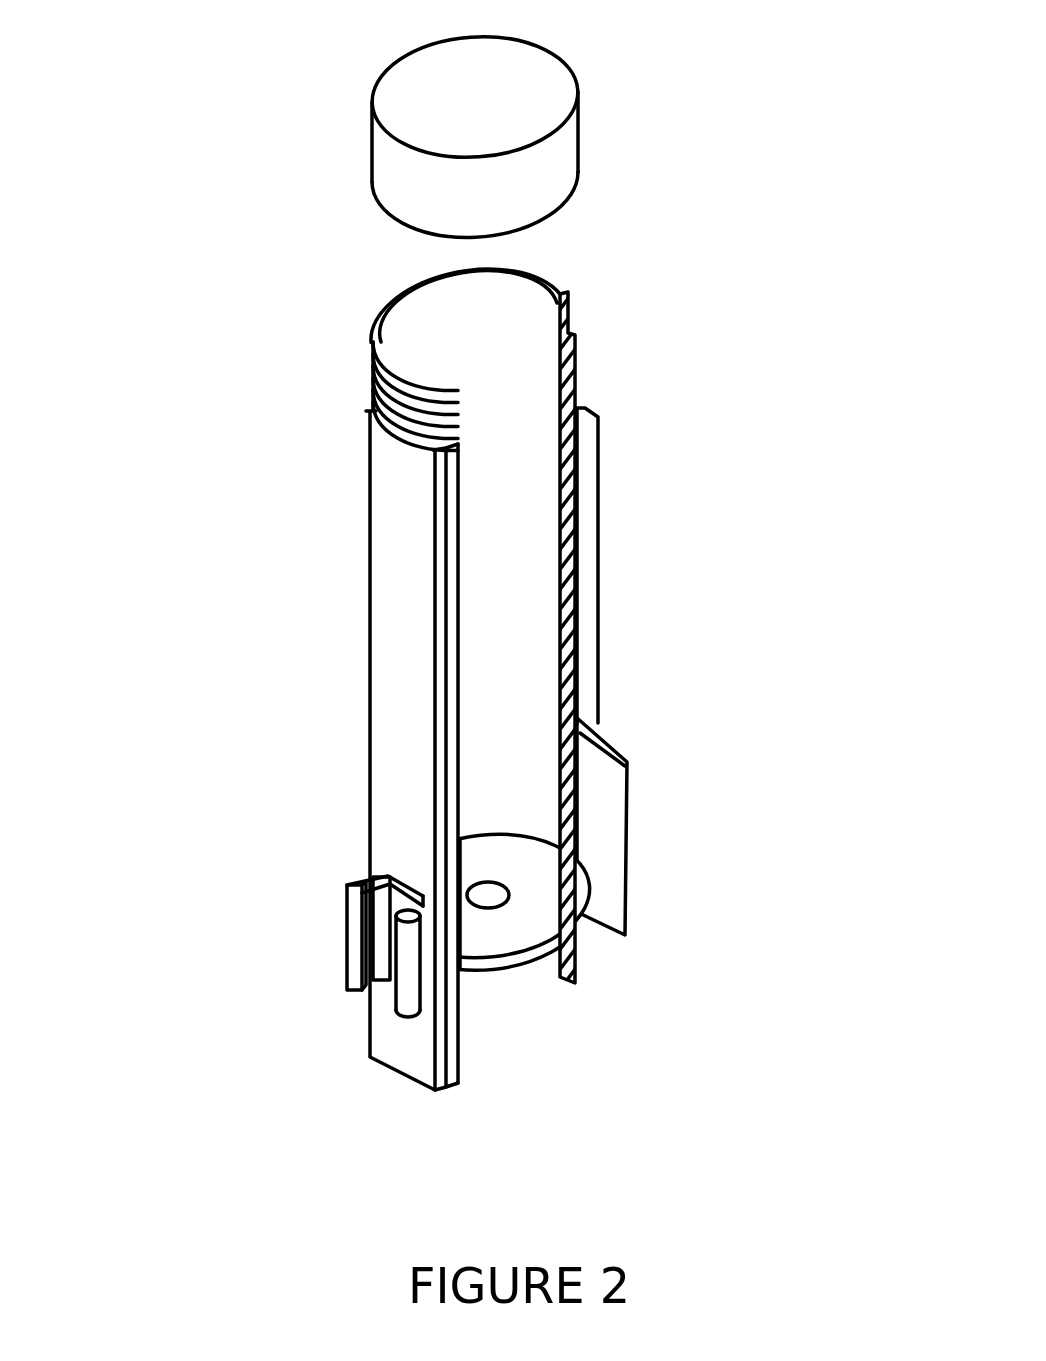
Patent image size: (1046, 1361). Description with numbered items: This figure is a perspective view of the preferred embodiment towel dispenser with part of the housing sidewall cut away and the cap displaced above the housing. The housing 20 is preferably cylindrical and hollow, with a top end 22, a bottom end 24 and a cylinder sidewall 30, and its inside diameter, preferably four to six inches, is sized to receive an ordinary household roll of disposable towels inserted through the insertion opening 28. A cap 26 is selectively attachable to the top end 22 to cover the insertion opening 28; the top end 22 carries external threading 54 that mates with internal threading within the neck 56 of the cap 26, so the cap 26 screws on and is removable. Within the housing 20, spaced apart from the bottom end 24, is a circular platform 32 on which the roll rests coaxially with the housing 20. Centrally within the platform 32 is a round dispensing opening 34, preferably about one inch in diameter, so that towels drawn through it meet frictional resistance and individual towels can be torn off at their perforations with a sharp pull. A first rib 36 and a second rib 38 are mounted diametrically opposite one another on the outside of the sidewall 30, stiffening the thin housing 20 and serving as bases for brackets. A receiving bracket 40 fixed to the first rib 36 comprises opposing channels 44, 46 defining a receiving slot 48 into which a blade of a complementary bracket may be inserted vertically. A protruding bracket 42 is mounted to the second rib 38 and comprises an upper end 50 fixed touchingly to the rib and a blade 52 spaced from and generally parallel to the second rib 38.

The housing 20 is at (512, 686).
The top end 22 is at (460, 274).
The bottom end 24 is at (572, 968).
The cap 26 is at (465, 125).
The insertion opening 28 is at (395, 287).
The cylinder sidewall 30 is at (455, 500).
The platform 32 is at (598, 1024).
The dispensing opening 34 is at (616, 866).
The first rib 36 is at (393, 683).
The second rib 38 is at (658, 640).
The receiving bracket 40 is at (397, 974).
The protruding bracket 42 is at (702, 823).
The channel 44 is at (281, 933).
The channel 46 is at (497, 1038).
The receiving slot 48 is at (325, 844).
The upper end 50 is at (658, 541).
The blade 52 is at (704, 744).
The external threading 54 is at (344, 386).
The neck 56 is at (404, 164).